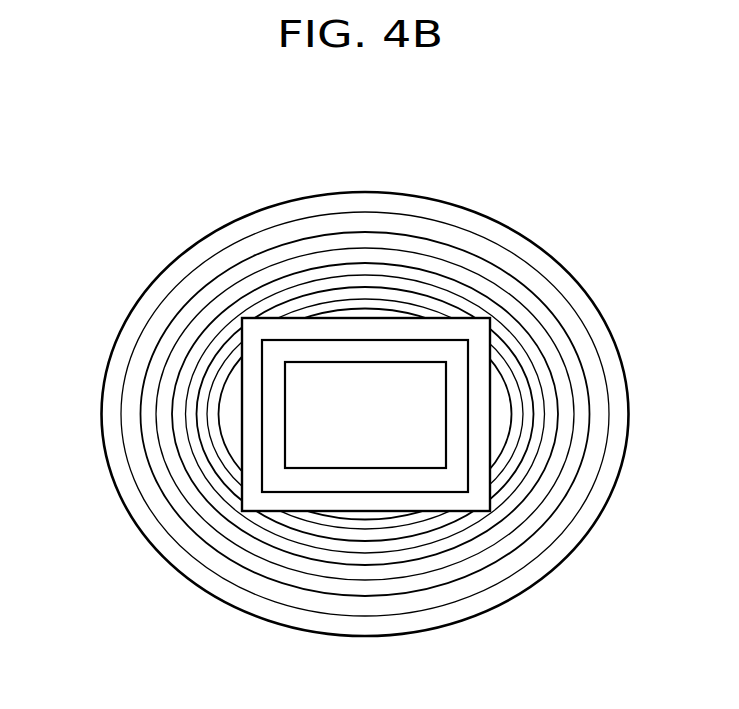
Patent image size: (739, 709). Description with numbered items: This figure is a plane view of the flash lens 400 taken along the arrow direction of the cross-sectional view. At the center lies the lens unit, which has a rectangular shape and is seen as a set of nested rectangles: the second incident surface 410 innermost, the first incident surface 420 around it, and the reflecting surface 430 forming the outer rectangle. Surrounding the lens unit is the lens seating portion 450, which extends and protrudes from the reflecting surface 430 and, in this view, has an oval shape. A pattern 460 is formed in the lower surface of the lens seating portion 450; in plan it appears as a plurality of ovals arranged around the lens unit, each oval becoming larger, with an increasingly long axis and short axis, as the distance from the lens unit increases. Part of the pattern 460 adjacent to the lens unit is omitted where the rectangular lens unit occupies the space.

The flash lens 400 is at (604, 248).
The second incident surface 410 is at (330, 466).
The first incident surface 420 is at (407, 450).
The reflecting surface 430 is at (453, 499).
The lens seating portion 450 is at (120, 323).
The pattern 460 is at (120, 413).